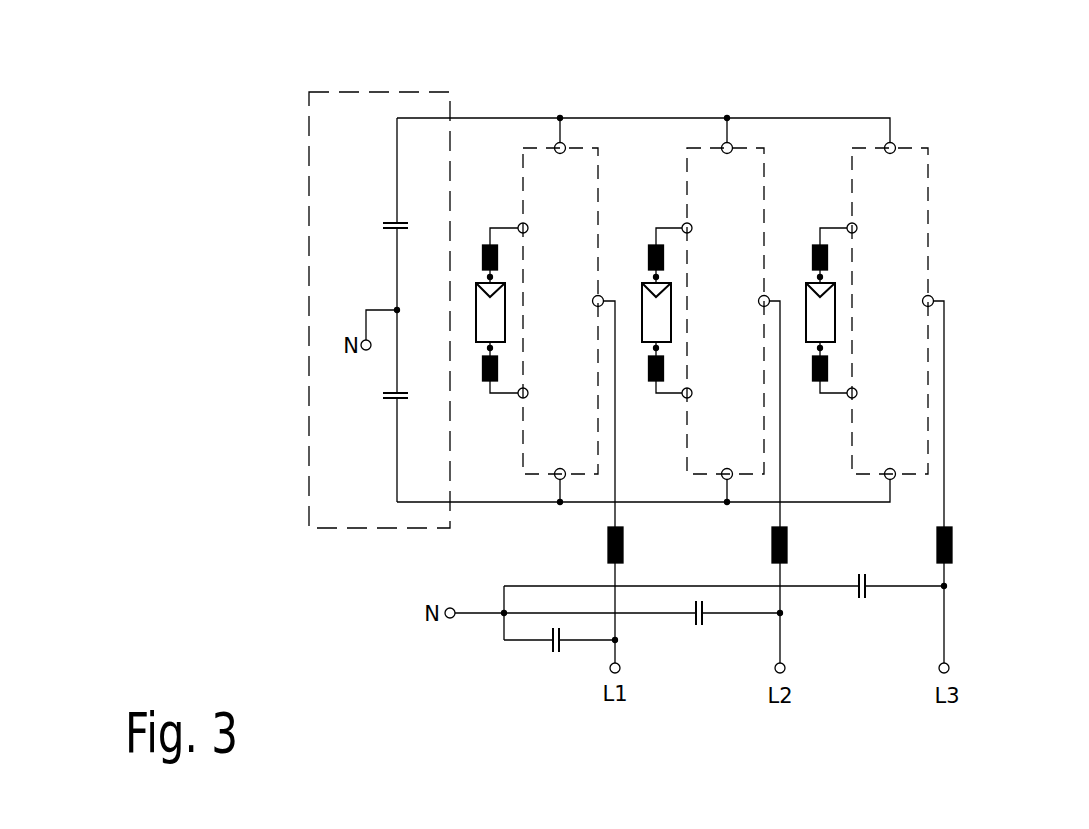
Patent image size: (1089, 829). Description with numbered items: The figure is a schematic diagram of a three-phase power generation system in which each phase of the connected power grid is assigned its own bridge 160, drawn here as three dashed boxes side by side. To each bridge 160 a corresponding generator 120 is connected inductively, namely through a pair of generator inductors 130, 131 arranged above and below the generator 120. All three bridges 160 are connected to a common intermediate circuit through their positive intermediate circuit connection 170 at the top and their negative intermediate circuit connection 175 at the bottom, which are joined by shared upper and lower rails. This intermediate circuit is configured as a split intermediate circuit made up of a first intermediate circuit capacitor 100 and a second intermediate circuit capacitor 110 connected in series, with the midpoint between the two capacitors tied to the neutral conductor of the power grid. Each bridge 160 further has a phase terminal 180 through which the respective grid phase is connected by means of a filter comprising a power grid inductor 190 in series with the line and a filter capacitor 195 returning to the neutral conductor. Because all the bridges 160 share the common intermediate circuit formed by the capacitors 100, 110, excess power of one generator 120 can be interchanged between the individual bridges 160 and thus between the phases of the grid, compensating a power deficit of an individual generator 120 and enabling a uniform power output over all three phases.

The first intermediate circuit capacitor 100 is at (393, 218).
The second intermediate circuit capacitor 110 is at (395, 402).
The generator 120 is at (475, 308).
The generator inductor 130 is at (488, 243).
The generator inductor 131 is at (485, 381).
The bridge 160 is at (598, 182).
The positive intermediate circuit connection 170 is at (557, 145).
The negative intermediate circuit connection 175 is at (555, 478).
The phase terminal 180 is at (600, 296).
The power grid inductor 190 is at (623, 548).
The filter capacitor 195 is at (556, 653).